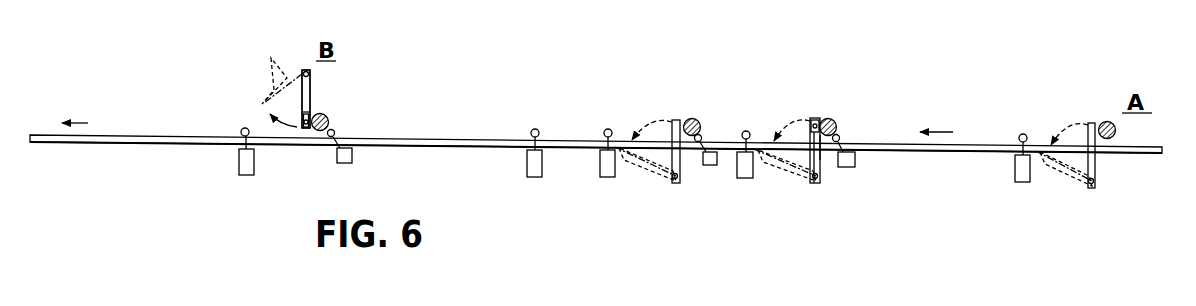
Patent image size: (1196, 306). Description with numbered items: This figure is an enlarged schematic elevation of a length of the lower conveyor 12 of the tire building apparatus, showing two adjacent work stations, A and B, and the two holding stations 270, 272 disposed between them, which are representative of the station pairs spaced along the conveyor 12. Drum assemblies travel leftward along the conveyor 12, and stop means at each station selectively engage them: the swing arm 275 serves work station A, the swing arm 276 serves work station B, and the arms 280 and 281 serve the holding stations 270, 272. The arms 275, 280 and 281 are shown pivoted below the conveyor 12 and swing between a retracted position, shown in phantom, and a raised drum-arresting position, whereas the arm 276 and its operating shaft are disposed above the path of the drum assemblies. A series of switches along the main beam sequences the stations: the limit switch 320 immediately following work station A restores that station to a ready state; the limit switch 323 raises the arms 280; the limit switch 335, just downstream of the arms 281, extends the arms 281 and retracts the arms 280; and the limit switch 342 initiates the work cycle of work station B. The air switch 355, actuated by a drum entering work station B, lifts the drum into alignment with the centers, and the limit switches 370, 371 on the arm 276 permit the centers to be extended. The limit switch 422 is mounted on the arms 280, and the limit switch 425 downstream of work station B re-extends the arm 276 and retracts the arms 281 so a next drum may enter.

The lower conveyor 12 is at (162, 128).
The holding station 270 is at (809, 114).
The holding station 272 is at (676, 116).
The swing arm 275 is at (1088, 125).
The swing arm 276 is at (286, 83).
The arm 280 is at (816, 121).
The arm 281 is at (672, 121).
The limit switch 320 is at (1023, 182).
The limit switch 323 is at (745, 178).
The limit switch 335 is at (607, 177).
The limit switch 342 is at (531, 177).
The air switch 355 is at (352, 163).
The limit switch 370 is at (310, 100).
The limit switch 371 is at (306, 120).
The limit switch 422 is at (820, 146).
The limit switch 425 is at (240, 170).